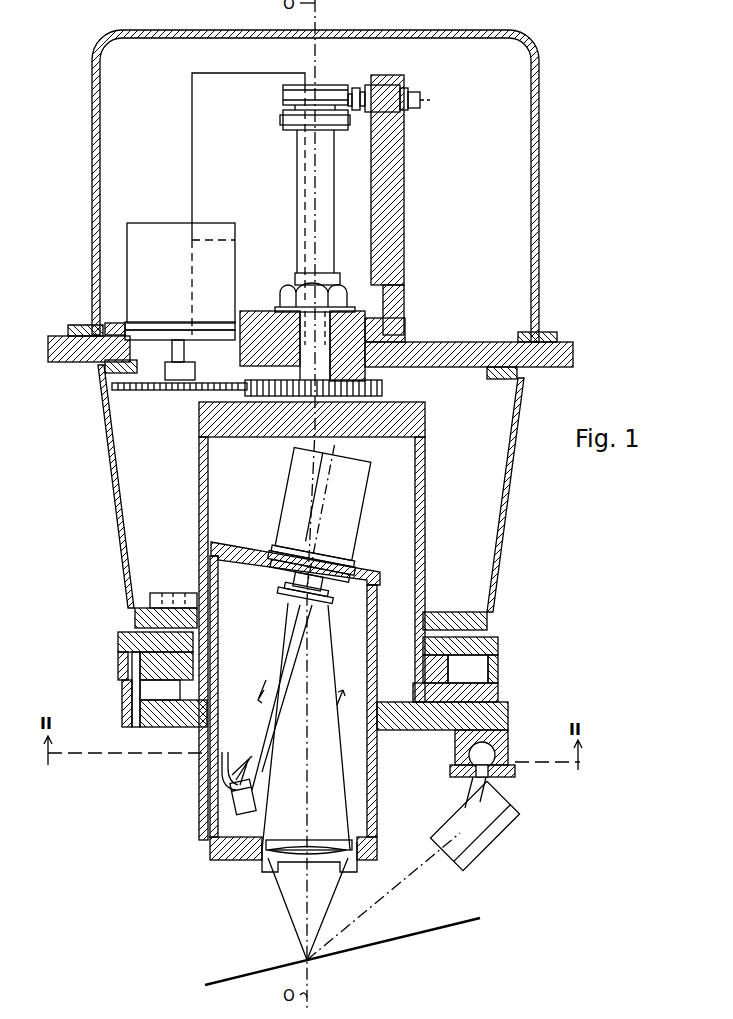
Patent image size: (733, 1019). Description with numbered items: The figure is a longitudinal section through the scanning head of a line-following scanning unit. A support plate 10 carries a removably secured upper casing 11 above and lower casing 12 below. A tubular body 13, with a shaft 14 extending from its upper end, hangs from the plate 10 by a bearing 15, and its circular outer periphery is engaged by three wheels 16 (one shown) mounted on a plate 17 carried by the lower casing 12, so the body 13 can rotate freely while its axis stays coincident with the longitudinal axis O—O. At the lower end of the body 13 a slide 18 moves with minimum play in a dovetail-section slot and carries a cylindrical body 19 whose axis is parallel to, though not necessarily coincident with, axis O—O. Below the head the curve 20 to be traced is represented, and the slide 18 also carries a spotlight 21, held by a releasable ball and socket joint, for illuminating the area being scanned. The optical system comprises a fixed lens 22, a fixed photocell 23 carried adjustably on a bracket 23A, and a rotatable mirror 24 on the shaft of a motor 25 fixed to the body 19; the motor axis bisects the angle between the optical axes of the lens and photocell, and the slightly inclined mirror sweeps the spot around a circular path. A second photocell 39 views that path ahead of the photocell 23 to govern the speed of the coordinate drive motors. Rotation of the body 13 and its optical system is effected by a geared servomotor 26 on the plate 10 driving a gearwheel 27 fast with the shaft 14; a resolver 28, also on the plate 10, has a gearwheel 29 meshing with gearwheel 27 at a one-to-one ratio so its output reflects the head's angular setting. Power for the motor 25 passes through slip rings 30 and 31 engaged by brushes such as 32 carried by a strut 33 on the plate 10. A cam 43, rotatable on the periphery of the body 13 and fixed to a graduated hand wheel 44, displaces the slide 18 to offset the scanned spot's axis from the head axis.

The support plate 10 is at (82, 362).
The upper casing 11 is at (539, 183).
The lower casing 12 is at (508, 492).
The tubular body 13 is at (425, 450).
The shaft 14 is at (333, 208).
The bearing 15 is at (266, 311).
The wheels 16 is at (150, 593).
The plate 17 is at (468, 612).
The slide 18 is at (508, 712).
The cylindrical body 19 is at (377, 787).
The curve 20 is at (428, 918).
The spotlight 21 is at (486, 838).
The fixed lens 22 is at (274, 862).
The fixed photocell 23 is at (236, 803).
The bracket 23A is at (220, 772).
The rotatable mirror 24 is at (286, 593).
The motor 25 is at (356, 527).
The geared servomotor 26 is at (192, 166).
The gearwheel 27 is at (383, 391).
The resolver 28 is at (155, 224).
The gearwheel 29 is at (150, 391).
The slip ring 30 is at (283, 95).
The slip ring 31 is at (283, 118).
The brush 32 is at (425, 97).
The strut 33 is at (397, 193).
The second photocell 39 is at (291, 726).
The cam 43 is at (140, 668).
The graduated hand wheel 44 is at (118, 640).